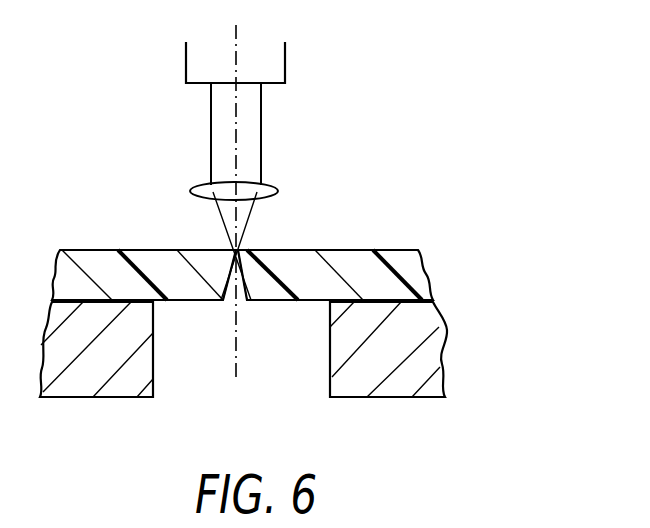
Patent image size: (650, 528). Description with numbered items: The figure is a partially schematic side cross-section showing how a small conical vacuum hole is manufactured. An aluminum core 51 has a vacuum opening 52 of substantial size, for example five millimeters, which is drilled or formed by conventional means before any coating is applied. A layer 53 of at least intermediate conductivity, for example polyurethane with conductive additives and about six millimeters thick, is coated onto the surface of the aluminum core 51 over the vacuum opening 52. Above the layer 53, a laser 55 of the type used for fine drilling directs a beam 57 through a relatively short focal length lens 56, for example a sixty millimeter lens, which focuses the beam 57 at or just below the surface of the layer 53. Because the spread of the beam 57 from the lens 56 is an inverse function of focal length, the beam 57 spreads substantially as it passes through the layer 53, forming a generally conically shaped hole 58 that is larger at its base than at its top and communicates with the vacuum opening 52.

The aluminum core 51 is at (432, 353).
The vacuum opening 52 is at (310, 374).
The layer 53 is at (423, 280).
The laser 55 is at (284, 64).
The short focal length lens 56 is at (280, 190).
The beam 57 is at (262, 120).
The conically shaped hole 58 is at (243, 297).